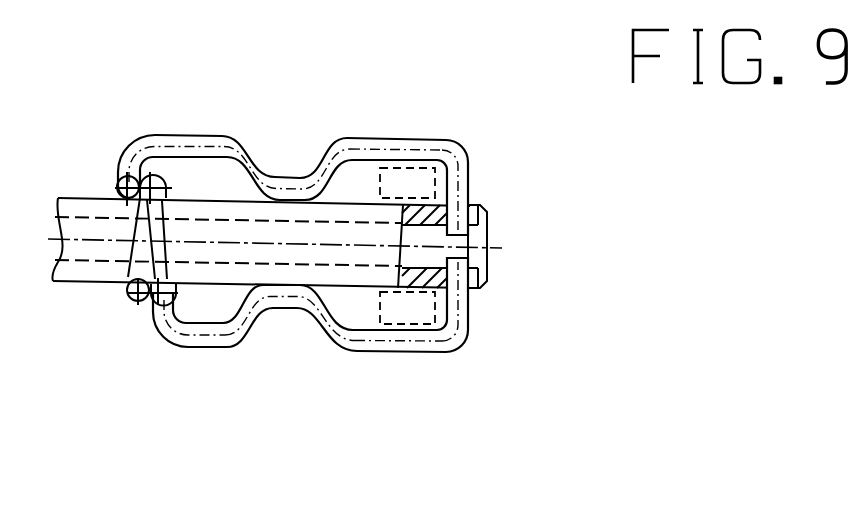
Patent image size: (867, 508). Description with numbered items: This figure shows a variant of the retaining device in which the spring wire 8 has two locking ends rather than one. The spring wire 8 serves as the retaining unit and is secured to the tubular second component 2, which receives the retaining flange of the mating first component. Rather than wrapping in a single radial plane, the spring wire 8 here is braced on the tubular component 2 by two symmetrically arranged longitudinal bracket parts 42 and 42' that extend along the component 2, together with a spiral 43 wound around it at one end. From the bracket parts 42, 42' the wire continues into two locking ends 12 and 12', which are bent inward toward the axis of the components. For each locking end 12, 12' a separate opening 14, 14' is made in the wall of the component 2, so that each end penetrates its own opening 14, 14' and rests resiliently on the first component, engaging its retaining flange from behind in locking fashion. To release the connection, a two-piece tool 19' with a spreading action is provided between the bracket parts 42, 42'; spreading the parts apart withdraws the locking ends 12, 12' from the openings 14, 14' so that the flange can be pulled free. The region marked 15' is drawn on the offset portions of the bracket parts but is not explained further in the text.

The spring wire 8 is at (123, 128).
The second component 2 is at (84, 274).
The longitudinal bracket part 42 is at (282, 99).
The longitudinal bracket part 42' is at (299, 391).
The offset portion of clip band 15' is at (307, 254).
The two-piece tool 19' is at (447, 268).
The locking end 12 is at (496, 132).
The locking end 12' is at (533, 337).
The opening 14 is at (515, 214).
The opening 14' is at (561, 282).
The spiral 43 is at (121, 297).